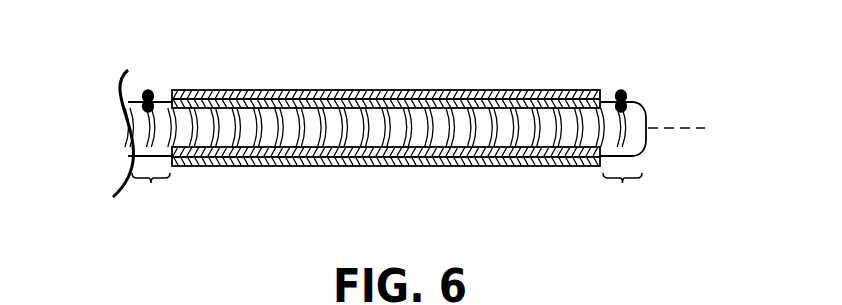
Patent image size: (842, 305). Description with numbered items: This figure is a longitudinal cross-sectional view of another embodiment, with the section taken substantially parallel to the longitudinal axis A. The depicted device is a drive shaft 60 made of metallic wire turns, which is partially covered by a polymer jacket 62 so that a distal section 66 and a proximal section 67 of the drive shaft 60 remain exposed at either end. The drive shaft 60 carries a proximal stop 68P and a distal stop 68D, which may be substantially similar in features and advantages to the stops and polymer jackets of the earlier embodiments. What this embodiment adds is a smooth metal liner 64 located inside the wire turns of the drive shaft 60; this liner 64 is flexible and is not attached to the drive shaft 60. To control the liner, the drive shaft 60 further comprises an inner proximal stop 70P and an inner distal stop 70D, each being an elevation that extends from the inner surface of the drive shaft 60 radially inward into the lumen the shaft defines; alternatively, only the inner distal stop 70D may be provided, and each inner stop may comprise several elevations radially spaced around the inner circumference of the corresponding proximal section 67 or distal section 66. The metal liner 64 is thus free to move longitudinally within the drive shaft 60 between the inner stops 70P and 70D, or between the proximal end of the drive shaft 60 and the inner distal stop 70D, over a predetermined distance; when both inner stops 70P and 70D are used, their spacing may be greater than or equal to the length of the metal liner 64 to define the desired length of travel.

The drive shaft 60 is at (245, 137).
The polymer jacket 62 is at (387, 90).
The smooth metal liner 64 is at (417, 153).
The distal section 66 is at (622, 192).
The proximal section 67 is at (151, 192).
The proximal stop 68P is at (150, 90).
The distal stop 68D is at (622, 90).
The inner proximal stop 70P is at (147, 110).
The inner distal stop 70D is at (647, 117).
The longitudinal axis A is at (685, 129).